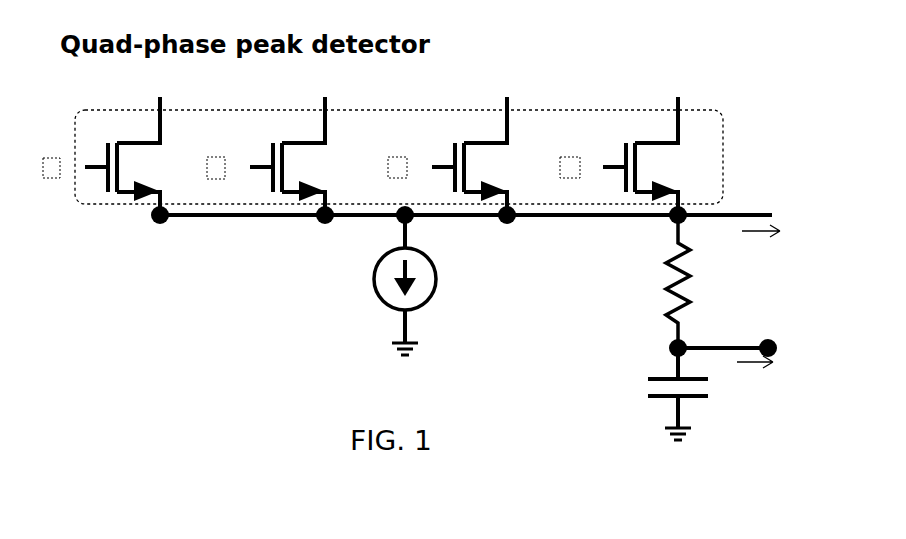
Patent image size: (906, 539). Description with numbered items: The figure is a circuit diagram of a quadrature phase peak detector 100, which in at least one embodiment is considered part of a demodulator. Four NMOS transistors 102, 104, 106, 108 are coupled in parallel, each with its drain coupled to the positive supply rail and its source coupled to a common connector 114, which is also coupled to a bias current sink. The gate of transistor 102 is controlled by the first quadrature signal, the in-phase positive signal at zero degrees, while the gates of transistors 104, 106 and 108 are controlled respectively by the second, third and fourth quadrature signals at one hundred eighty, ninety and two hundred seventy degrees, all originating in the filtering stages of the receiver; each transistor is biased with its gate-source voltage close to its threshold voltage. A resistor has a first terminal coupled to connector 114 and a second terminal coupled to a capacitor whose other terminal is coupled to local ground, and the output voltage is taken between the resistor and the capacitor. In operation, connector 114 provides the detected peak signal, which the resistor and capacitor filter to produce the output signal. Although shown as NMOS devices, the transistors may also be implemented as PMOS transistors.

The quadrature phase peak detector 100 is at (706, 68).
The NMOS transistor 102 is at (128, 156).
The NMOS transistor 104 is at (293, 156).
The NMOS transistor 106 is at (475, 156).
The NMOS transistor 108 is at (655, 156).
The connector 114 is at (260, 218).